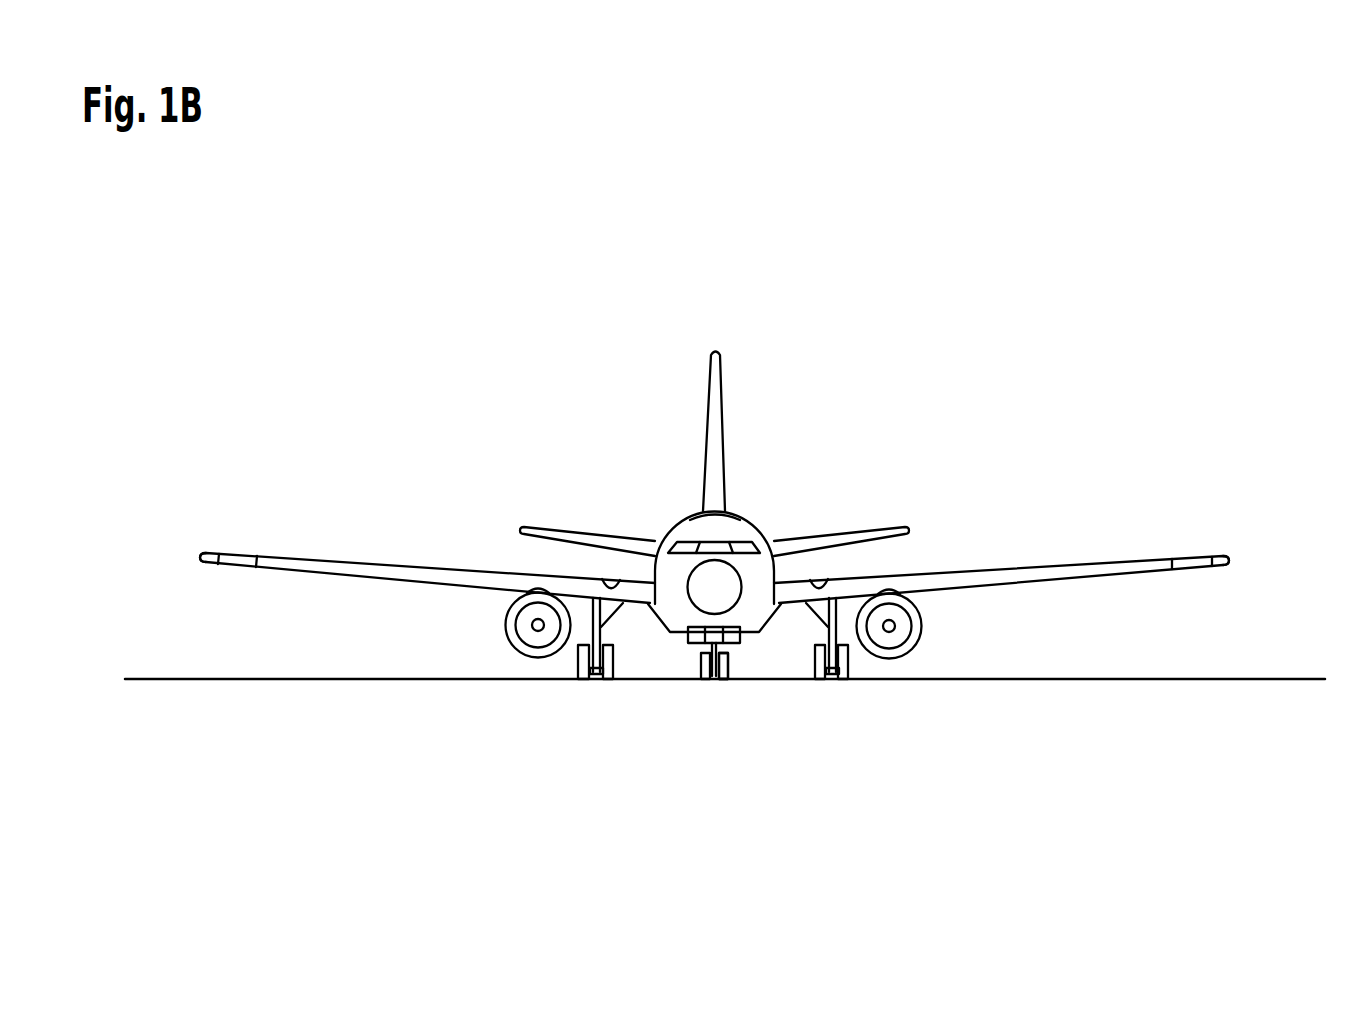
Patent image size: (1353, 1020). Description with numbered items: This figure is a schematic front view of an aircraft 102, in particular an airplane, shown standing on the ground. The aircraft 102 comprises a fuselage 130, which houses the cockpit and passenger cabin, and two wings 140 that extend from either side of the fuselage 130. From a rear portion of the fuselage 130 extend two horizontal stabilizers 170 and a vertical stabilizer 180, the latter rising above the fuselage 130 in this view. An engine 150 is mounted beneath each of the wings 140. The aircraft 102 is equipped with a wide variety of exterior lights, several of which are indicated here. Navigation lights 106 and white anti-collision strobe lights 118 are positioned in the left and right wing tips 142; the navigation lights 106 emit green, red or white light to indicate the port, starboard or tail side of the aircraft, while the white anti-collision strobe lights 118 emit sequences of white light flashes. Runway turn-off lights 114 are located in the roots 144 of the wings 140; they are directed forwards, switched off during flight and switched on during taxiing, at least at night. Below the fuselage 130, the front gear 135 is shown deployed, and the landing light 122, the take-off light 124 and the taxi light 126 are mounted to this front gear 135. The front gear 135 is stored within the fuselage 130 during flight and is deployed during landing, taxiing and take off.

The aircraft 102 is at (738, 532).
The navigation lights 106 is at (257, 556).
The runway turn-off lights 114 is at (612, 580).
The white anti-collision strobe lights 118 is at (219, 554).
The landing light 122 is at (738, 645).
The take-off light 124 is at (688, 638).
The taxi light 126 is at (705, 645).
The fuselage 130 is at (680, 504).
The front gear 135 is at (727, 685).
The wings 140 is at (342, 534).
The wing tips 142 is at (203, 578).
The roots 144 is at (644, 620).
The engine 150 is at (500, 617).
The horizontal stabilizers 170 is at (574, 509).
The vertical stabilizer 180 is at (733, 399).